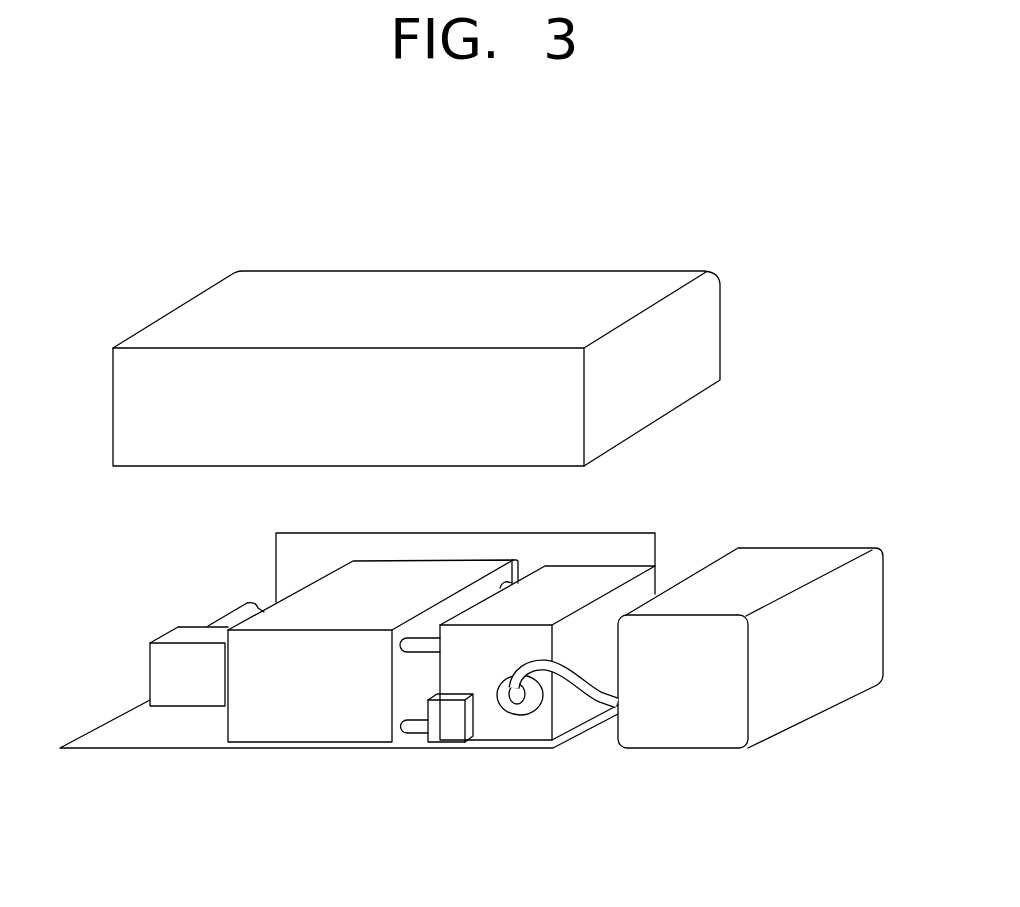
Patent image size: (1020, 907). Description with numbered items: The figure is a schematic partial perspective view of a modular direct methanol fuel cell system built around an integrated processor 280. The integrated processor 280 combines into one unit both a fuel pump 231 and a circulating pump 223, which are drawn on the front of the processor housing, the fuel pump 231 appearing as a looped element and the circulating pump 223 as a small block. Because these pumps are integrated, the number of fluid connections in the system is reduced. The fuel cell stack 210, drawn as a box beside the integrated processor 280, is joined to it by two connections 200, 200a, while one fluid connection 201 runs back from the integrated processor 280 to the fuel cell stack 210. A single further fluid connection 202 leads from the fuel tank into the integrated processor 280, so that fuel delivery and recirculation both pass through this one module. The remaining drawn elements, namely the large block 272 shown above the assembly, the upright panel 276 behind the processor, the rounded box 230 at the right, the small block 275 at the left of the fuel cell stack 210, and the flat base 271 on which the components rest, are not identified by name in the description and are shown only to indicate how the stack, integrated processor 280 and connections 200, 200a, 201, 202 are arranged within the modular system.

The cover 272 is at (381, 287).
The rear panel 276 is at (622, 547).
The integrated processor 280 is at (617, 577).
The power unit 230 is at (690, 736).
The fuel cell stack 210 is at (303, 743).
The block 275 is at (185, 698).
The base plate 271 is at (117, 741).
The connection 200 is at (418, 645).
The connection 200a is at (508, 560).
The fluid connection 201 is at (417, 729).
The circulating pump 223 is at (447, 737).
The fuel pump 231 is at (512, 712).
The fluid connection 202 is at (598, 702).